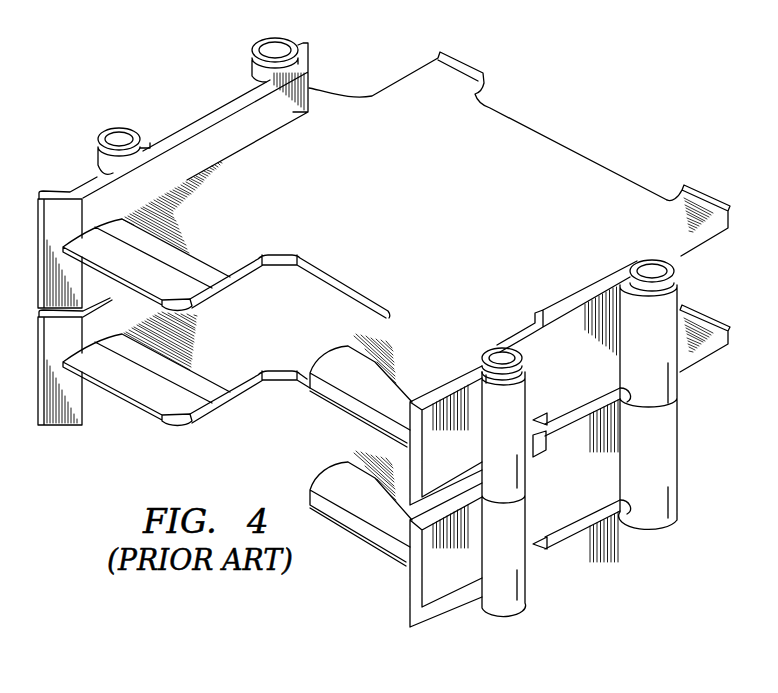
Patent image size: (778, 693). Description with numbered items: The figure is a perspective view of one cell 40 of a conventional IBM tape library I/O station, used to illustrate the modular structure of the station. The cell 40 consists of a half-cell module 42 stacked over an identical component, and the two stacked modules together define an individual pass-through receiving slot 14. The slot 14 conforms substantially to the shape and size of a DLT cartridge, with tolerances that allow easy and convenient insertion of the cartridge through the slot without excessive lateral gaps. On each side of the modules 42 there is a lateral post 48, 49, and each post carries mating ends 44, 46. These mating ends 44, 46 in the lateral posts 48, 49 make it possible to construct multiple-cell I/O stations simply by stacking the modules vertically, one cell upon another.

The slot 14 is at (290, 333).
The cell 40 is at (677, 86).
The half-cell module 42 is at (568, 144).
The mating end 44 is at (652, 262).
The mating end 46 is at (513, 615).
The lateral post 48 is at (520, 393).
The lateral post 49 is at (673, 293).